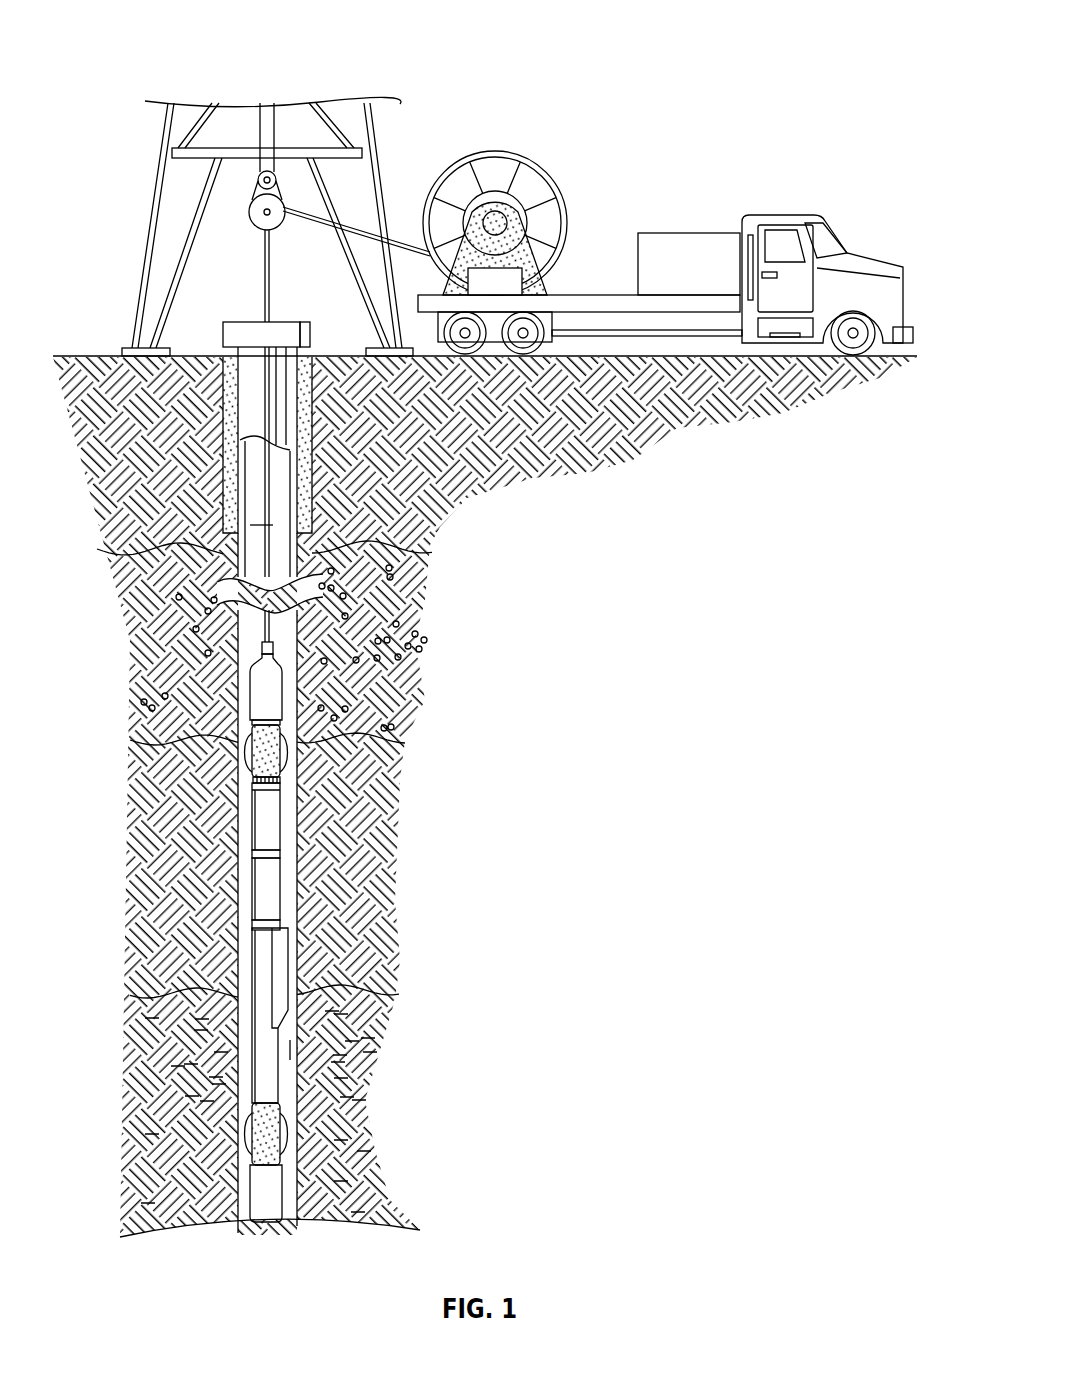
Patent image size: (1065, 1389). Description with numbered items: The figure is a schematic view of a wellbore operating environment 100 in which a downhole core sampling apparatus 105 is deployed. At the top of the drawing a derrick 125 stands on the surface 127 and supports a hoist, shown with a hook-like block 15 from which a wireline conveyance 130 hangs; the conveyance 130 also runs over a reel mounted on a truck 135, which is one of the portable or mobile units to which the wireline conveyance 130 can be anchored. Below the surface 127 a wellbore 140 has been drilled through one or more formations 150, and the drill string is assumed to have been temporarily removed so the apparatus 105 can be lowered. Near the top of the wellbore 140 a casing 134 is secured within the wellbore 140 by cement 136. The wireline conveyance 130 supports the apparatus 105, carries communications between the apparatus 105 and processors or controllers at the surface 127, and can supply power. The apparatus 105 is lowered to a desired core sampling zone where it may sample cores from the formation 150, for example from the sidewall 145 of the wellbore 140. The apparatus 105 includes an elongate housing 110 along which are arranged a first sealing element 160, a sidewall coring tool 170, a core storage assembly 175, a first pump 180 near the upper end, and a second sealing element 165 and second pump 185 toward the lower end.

The operating environment 100 is at (752, 89).
The hook / traveling block 15 is at (272, 200).
The downhole core sampling apparatus 105 is at (240, 853).
The elongate housing 110 is at (289, 1050).
The derrick 125 is at (158, 213).
The surface 127 is at (78, 355).
The wireline conveyance 130 is at (383, 233).
The casing 134 is at (293, 467).
The truck 135 is at (784, 213).
The cement 136 is at (307, 417).
The wellbore 140 is at (273, 525).
The sidewall 145 is at (296, 636).
The formation 150 is at (117, 618).
The first sealing element 160 is at (288, 748).
The second sealing element 165 is at (288, 1135).
The sidewall coring tool 170 is at (262, 880).
The core storage assembly 175 is at (260, 952).
The first pump 180 is at (268, 685).
The second pump 185 is at (268, 1178).